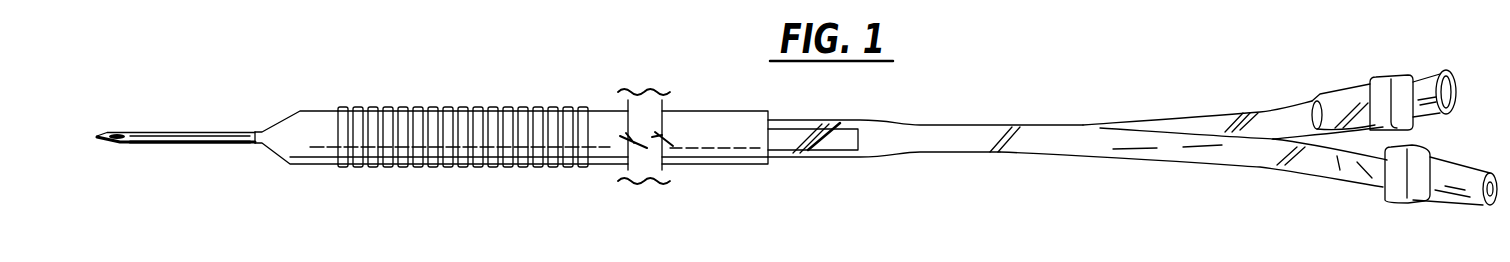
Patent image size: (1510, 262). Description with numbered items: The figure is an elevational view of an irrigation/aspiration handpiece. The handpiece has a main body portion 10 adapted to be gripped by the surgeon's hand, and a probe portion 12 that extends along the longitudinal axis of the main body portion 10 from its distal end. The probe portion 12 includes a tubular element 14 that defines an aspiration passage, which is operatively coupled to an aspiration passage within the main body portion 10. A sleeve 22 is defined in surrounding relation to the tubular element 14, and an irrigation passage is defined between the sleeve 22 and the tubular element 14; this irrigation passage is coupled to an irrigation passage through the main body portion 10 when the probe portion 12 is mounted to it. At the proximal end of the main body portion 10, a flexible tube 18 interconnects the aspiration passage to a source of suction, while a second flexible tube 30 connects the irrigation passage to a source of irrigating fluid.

The main body portion 10 is at (509, 103).
The probe portion 12 is at (180, 123).
The tubular element 14 is at (103, 139).
The sleeve 22 is at (200, 145).
The flexible tube 30 is at (1220, 120).
The flexible tube 18 is at (1225, 157).